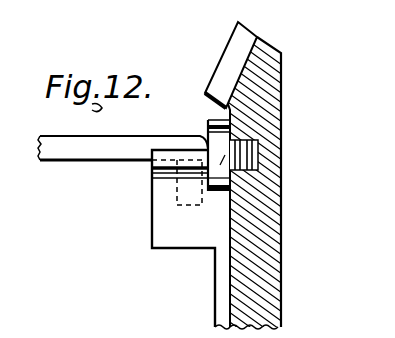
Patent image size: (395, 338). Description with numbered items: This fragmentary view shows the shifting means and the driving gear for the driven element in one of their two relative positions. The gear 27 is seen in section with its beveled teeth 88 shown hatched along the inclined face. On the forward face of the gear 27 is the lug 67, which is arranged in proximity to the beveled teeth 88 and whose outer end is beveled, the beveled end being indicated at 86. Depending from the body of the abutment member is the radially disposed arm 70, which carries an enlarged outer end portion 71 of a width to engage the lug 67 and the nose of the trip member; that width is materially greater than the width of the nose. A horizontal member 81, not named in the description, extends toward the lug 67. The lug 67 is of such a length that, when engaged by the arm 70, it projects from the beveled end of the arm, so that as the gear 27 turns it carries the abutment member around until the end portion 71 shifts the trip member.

The gear 27 is at (258, 100).
The beveled teeth 88 is at (238, 45).
The beveled end 86 is at (212, 122).
The horizontal arm 81 is at (180, 158).
The enlarged outer end portion 71 is at (163, 217).
The lug 67 is at (208, 177).
The arm 70 is at (222, 279).